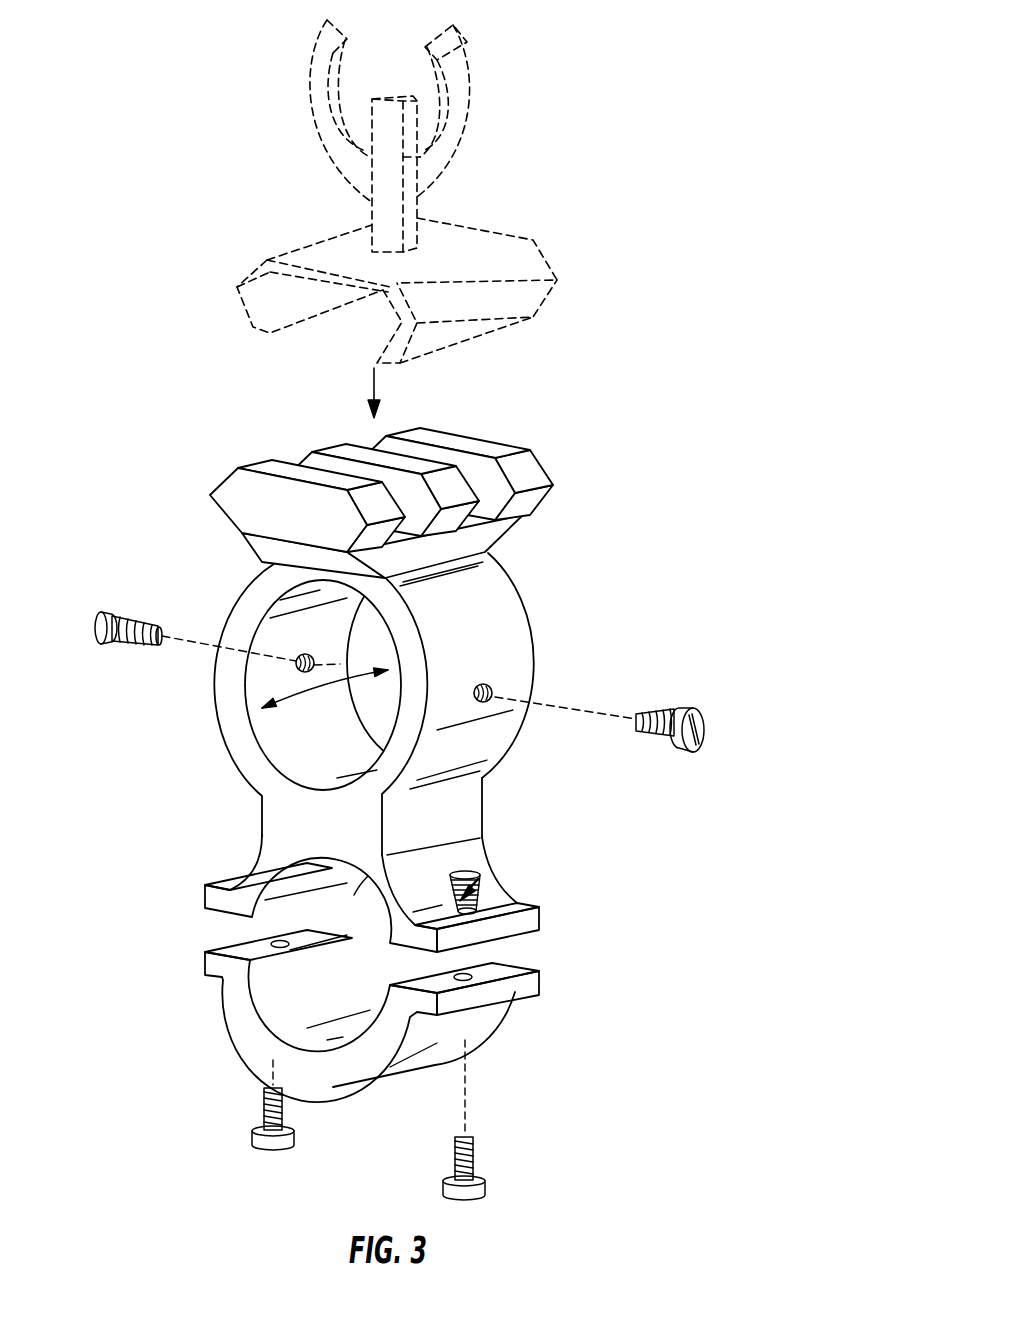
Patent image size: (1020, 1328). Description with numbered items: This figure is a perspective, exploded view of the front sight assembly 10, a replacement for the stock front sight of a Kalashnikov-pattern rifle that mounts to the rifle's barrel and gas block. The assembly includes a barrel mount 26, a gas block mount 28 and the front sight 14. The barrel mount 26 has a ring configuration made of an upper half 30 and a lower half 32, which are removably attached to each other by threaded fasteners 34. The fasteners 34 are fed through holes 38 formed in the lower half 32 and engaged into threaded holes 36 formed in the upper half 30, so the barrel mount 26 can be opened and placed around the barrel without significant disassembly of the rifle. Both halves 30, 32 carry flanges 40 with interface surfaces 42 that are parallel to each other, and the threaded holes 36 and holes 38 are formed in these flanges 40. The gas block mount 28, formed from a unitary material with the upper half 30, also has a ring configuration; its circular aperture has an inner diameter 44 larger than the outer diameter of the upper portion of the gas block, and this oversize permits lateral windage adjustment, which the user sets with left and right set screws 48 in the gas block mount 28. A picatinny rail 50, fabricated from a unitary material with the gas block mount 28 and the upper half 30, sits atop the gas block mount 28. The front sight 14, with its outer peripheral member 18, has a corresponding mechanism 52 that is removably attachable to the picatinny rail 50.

The front sight assembly 10 is at (833, 20).
The front sight 14 is at (476, 133).
The outer peripheral member 18 is at (312, 60).
The corresponding mechanism 52 is at (583, 245).
The picatinny rail 50 is at (566, 445).
The gas block mount 28 is at (763, 532).
The inner diameter 44 is at (335, 686).
The set screws 48 is at (142, 622).
The barrel mount 26 is at (409, 977).
The upper half 30 is at (428, 875).
The lower half 32 is at (377, 1004).
The flanges 40 is at (215, 900).
The threaded holes 36 is at (507, 856).
The holes 38 is at (270, 948).
The interface surfaces 42 is at (240, 947).
The threaded fasteners 34 is at (262, 1110).